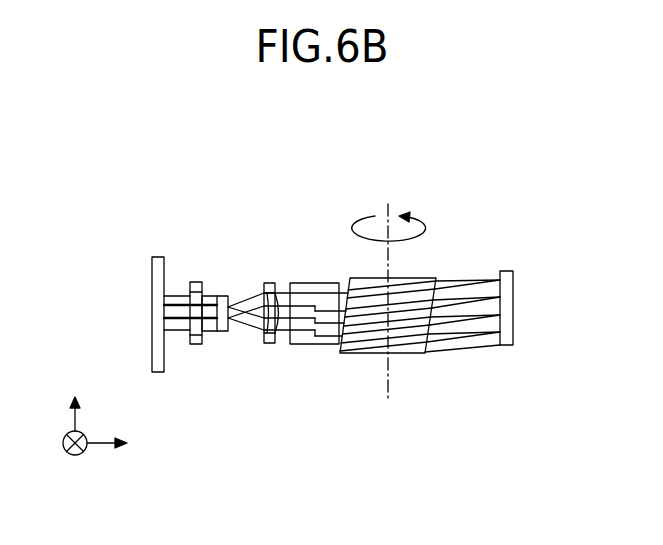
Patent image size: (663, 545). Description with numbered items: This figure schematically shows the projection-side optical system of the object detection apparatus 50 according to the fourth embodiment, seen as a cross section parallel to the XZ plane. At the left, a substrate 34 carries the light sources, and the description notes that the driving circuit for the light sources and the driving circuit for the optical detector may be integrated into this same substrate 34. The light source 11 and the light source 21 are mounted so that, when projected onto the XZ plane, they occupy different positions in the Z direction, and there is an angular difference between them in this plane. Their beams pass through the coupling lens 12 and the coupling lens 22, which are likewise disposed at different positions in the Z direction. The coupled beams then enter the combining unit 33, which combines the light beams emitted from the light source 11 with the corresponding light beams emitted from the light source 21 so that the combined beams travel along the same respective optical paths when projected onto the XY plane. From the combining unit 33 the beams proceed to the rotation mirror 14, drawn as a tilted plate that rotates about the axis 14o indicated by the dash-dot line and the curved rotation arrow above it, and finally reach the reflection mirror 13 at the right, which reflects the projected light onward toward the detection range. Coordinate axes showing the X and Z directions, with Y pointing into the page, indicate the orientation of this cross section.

The object detection apparatus 50 is at (79, 185).
The substrate 34 is at (161, 257).
The light source 11 is at (198, 283).
The light source 21 is at (198, 344).
The coupling lens 12 is at (269, 283).
The coupling lens 22 is at (268, 343).
The combining unit 33 is at (314, 283).
The rotation mirror 14 is at (361, 364).
The rotation axis of plate 14 14o is at (389, 281).
The reflection mirror 13 is at (504, 345).